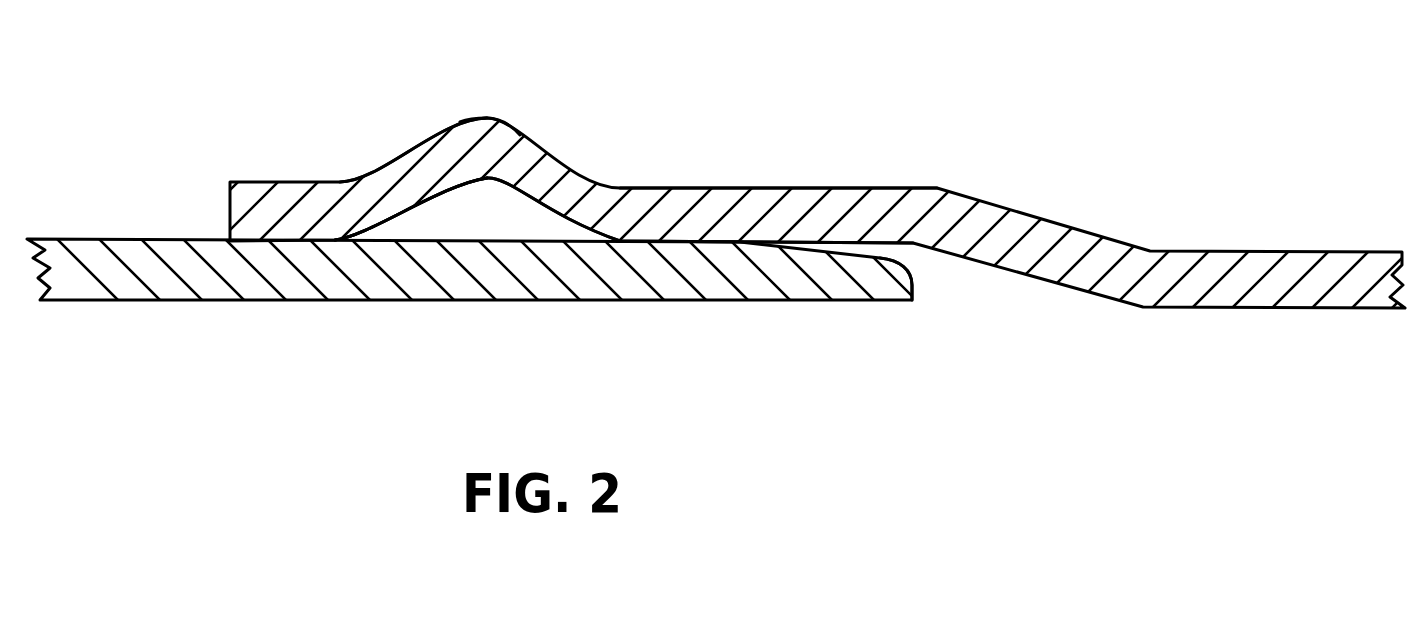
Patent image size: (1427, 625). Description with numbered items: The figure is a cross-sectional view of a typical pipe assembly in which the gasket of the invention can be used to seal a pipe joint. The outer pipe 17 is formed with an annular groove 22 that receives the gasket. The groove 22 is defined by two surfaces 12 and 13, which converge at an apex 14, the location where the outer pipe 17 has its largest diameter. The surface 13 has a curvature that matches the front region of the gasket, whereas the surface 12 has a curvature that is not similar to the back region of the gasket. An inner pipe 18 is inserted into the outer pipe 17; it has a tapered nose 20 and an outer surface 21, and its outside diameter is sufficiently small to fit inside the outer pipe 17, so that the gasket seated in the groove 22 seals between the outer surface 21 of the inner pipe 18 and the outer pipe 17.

The surface 12 is at (553, 212).
The surface 13 is at (440, 190).
The apex 14 is at (492, 178).
The outer pipe 17 is at (703, 213).
The inner pipe 18 is at (317, 280).
The tapered nose 20 is at (868, 260).
The outer surface 21 is at (442, 243).
The annular groove 22 is at (495, 220).